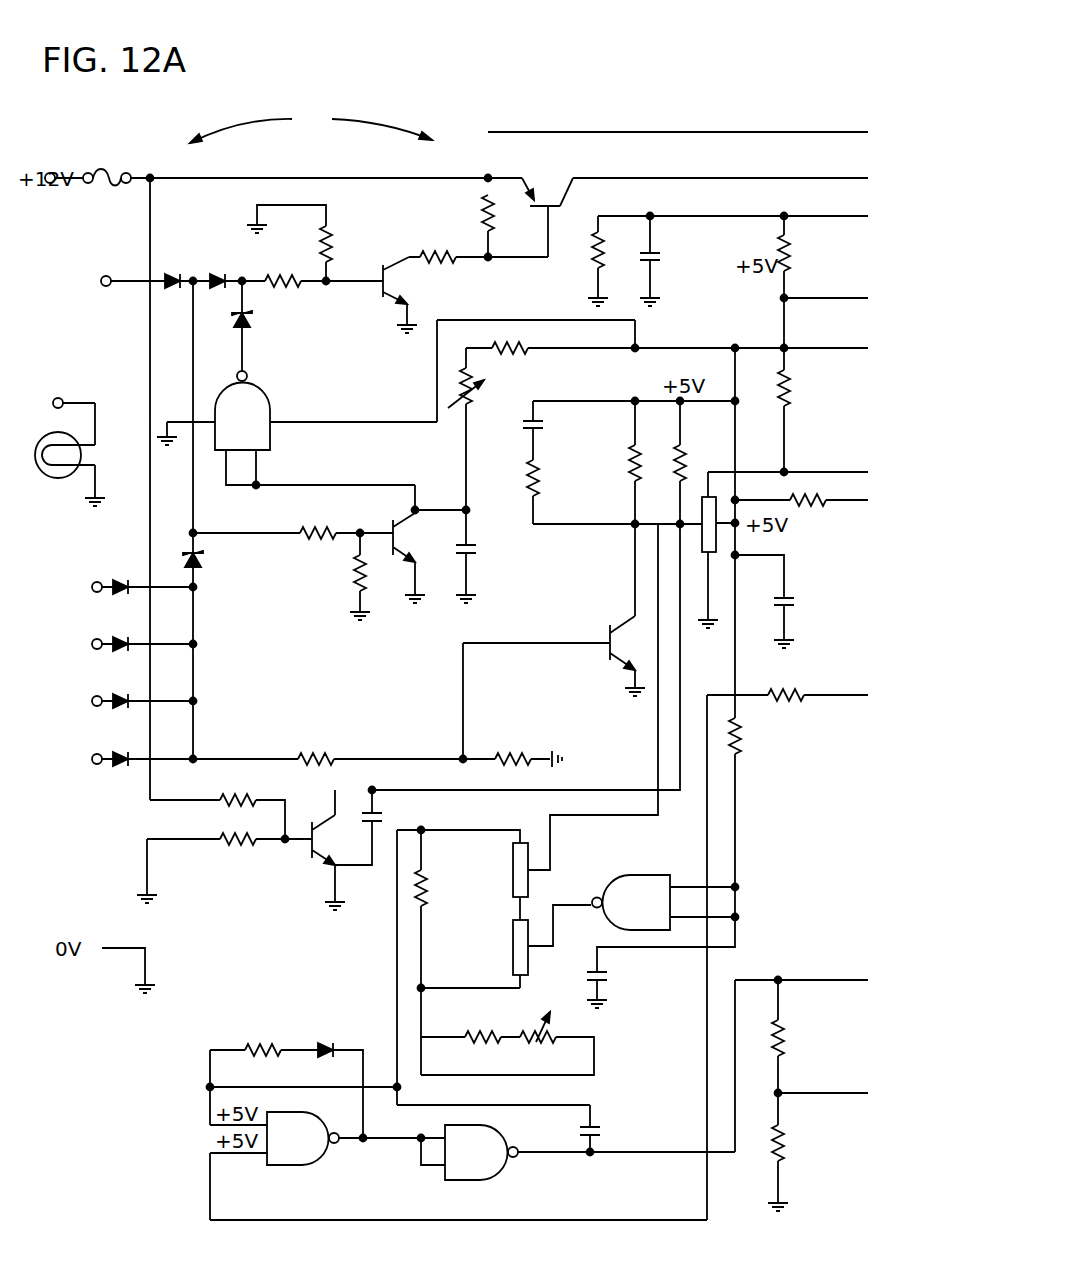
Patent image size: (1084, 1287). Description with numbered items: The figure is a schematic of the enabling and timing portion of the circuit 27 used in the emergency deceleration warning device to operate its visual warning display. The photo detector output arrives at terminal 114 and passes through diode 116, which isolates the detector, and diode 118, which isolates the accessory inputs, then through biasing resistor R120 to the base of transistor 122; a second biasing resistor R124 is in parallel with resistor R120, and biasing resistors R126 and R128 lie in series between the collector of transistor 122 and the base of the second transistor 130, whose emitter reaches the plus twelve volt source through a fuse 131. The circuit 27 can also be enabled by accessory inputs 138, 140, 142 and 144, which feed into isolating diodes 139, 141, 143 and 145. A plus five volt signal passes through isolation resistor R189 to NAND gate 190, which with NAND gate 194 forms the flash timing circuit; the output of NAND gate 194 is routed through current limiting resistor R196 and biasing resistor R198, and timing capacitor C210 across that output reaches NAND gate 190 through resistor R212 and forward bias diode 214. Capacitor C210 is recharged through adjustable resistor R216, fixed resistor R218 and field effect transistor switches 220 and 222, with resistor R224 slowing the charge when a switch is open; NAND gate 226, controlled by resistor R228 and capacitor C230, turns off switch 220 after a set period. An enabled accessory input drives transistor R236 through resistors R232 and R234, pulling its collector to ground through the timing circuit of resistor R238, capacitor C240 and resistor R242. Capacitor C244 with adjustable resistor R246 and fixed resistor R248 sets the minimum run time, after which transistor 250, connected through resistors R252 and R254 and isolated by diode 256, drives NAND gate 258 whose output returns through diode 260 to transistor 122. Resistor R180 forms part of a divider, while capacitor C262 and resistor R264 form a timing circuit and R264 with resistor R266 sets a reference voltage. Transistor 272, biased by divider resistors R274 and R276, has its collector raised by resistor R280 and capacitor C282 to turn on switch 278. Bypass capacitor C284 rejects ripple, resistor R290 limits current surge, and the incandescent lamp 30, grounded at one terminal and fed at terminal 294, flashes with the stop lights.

The circuit 27 is at (311, 129).
The incandescent lamp 30 is at (50, 480).
The terminal 114 is at (106, 275).
The diode 116 is at (170, 272).
The diode 118 is at (215, 272).
The transistor 122 is at (400, 258).
The second transistor 130 is at (548, 195).
The fuse 131 is at (108, 172).
The accessory input 138 is at (92, 587).
The diode 139 is at (115, 580).
The accessory input 140 is at (92, 644).
The diode 141 is at (118, 637).
The accessory input 142 is at (92, 701).
The diode 143 is at (115, 694).
The accessory input 144 is at (92, 759).
The diode 145 is at (115, 752).
The NAND gate 190 is at (302, 1168).
The second NAND gate 194 is at (482, 1182).
The forward bias diode 214 is at (323, 1044).
The field effect transistor switch 220 is at (512, 955).
The field effect transistor switch 222 is at (530, 858).
The NAND gate 226 is at (630, 878).
The transistor 250 is at (400, 518).
The diode 256 is at (203, 560).
The NAND gate 258 is at (265, 392).
The diode 260 is at (252, 322).
The transistor 272 is at (318, 822).
The field effect transistor switch 278 is at (702, 540).
The lamp terminal 294 is at (62, 397).
The biasing resistor R120 is at (300, 290).
The second biasing resistor R124 is at (320, 248).
The biasing resistor R126 is at (450, 265).
The biasing resistor R128 is at (482, 222).
The resistor R180 is at (780, 372).
The chip-to-chip isolation resistor R189 is at (790, 700).
The current limiting resistor R196 is at (790, 1040).
The biasing resistor R198 is at (790, 1147).
The resistor R212 is at (262, 1045).
The adjustable resistor R216 is at (536, 1030).
The fixed resistor R218 is at (480, 1042).
The third resistor R224 is at (430, 888).
The resistor R228 is at (742, 740).
The current limiting resistor R232 is at (312, 755).
The biasing resistor R234 is at (515, 755).
The transistor R236 is at (605, 650).
The current limiting resistor R238 is at (542, 480).
The time constant-providing resistor R242 is at (630, 472).
The adjustable resistor R246 is at (458, 390).
The fixed resistor R248 is at (522, 356).
The biasing resistor R252 is at (350, 578).
The current-limiting resistor R254 is at (312, 530).
The resistor R264 is at (780, 240).
The resistor R266 is at (595, 255).
The resistor R274 is at (232, 797).
The resistor R276 is at (233, 844).
The resistor R280 is at (678, 448).
The resistor R290 is at (802, 505).
The capacitor C210 is at (605, 1133).
The capacitor C230 is at (607, 978).
The capacitor C240 is at (545, 426).
The capacitor C244 is at (476, 548).
The capacitor C262 is at (645, 250).
The capacitor C282 is at (382, 819).
The capacitor C284 is at (794, 603).